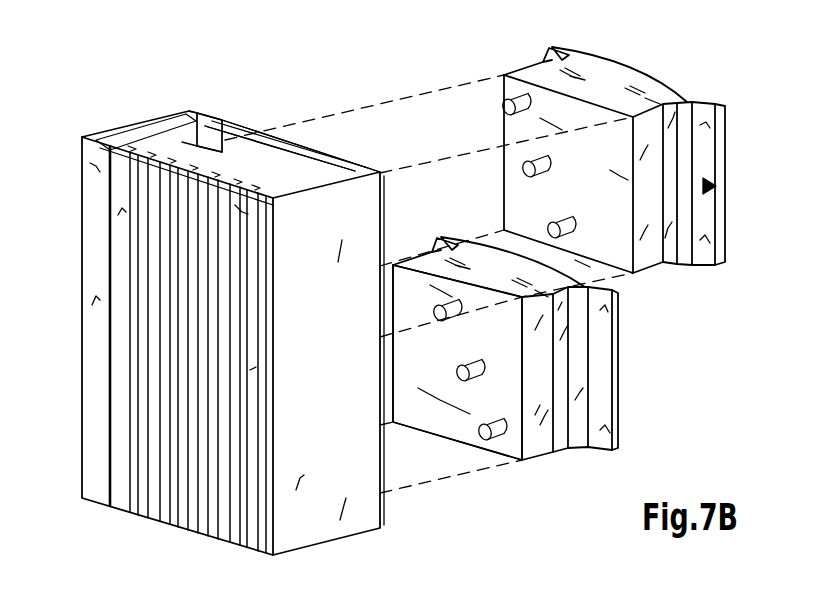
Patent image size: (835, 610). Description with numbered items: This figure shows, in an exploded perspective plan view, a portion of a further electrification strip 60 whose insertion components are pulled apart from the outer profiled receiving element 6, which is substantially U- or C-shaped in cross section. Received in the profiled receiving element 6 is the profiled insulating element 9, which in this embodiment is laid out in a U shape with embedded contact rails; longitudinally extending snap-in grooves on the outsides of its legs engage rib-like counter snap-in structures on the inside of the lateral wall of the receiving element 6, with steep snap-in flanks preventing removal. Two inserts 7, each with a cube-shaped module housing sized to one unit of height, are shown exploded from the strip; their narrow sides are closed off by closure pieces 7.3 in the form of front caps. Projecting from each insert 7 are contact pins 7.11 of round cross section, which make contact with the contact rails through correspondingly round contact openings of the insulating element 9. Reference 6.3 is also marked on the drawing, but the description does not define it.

The profiled receiving element 6 is at (350, 536).
The electrification strip 60 is at (231, 120).
The curved top surface 6.3 is at (242, 152).
The profiled insulating element 9 is at (256, 158).
The insert 7 is at (641, 53).
The closure piece 7.3 is at (457, 427).
The contact pin 7.11 is at (503, 107).